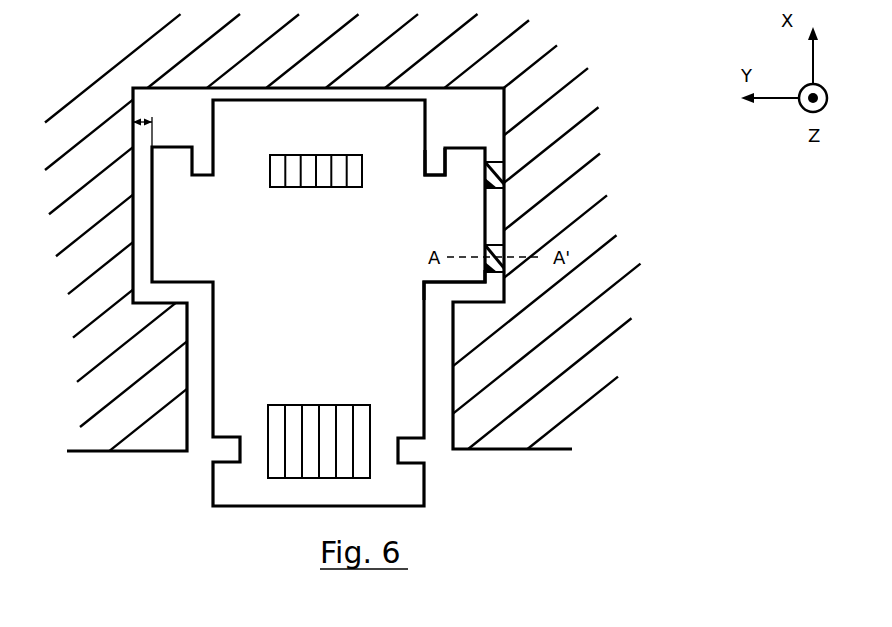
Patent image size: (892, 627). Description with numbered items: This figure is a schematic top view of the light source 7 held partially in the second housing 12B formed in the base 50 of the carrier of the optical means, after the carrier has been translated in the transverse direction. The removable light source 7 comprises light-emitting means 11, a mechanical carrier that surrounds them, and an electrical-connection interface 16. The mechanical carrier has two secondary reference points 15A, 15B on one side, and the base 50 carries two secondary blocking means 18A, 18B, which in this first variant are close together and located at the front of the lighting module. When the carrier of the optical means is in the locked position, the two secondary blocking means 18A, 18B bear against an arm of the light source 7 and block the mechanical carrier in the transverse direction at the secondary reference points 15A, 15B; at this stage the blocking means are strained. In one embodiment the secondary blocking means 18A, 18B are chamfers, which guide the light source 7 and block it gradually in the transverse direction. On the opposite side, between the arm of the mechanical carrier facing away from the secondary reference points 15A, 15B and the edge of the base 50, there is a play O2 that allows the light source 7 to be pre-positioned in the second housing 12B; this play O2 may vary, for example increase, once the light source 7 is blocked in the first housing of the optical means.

The light source 7 is at (178, 477).
The light-emitting means 11 is at (288, 168).
The second housing 12B is at (455, 130).
The secondary reference point 15A is at (470, 176).
The secondary reference point 15B is at (443, 270).
The electrical-connection interface 16 is at (358, 436).
The secondary blocking means 18A is at (508, 175).
The secondary blocking means 18B is at (505, 258).
The base 50 is at (587, 195).
The play O2 is at (148, 121).